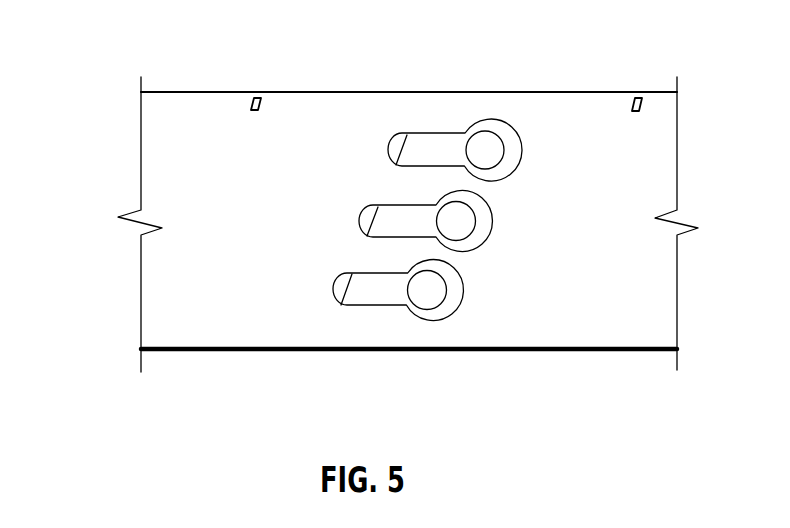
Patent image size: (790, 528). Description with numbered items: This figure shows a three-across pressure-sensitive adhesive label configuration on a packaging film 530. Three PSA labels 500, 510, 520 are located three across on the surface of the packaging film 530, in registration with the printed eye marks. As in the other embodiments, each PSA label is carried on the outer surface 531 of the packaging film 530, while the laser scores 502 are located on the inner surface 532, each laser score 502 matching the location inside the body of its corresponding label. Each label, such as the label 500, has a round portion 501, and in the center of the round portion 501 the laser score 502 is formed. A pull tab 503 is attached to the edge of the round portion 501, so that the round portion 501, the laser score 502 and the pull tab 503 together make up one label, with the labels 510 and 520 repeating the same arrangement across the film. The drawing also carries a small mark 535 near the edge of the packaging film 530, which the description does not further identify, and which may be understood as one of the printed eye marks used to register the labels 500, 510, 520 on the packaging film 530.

The PSA label 500 is at (445, 110).
The round portion 501 is at (433, 133).
The laser score 502 is at (505, 150).
The pull tab 503 is at (390, 148).
The PSA label 510 is at (400, 238).
The PSA label 520 is at (361, 307).
The packaging film 530 is at (230, 110).
The outer surface 531 is at (168, 293).
The inner surface 532 is at (562, 332).
The alignment mark 535 is at (637, 97).